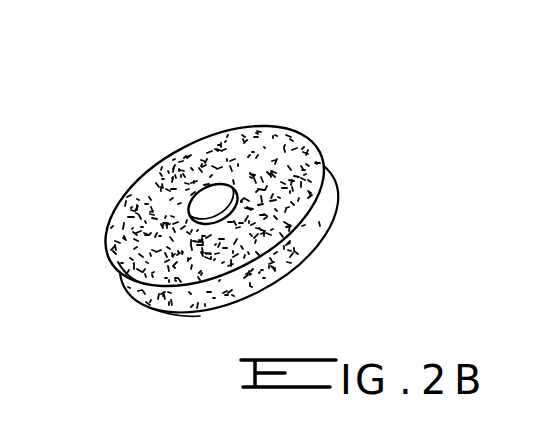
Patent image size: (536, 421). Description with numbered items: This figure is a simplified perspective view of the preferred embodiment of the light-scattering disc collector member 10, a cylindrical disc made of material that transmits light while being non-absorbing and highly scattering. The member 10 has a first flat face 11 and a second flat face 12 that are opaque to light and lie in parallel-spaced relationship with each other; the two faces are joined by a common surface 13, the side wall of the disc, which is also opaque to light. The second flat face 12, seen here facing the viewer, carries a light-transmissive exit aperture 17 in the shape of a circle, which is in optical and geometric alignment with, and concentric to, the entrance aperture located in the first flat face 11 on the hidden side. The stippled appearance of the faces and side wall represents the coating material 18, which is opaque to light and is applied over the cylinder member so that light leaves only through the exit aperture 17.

The light-scattering disc collector member 10 is at (302, 102).
The first flat face 11 is at (312, 250).
The second flat face 12 is at (313, 143).
The common surface 13 is at (174, 310).
The exit aperture 17 is at (224, 209).
The coating material 18 is at (143, 297).